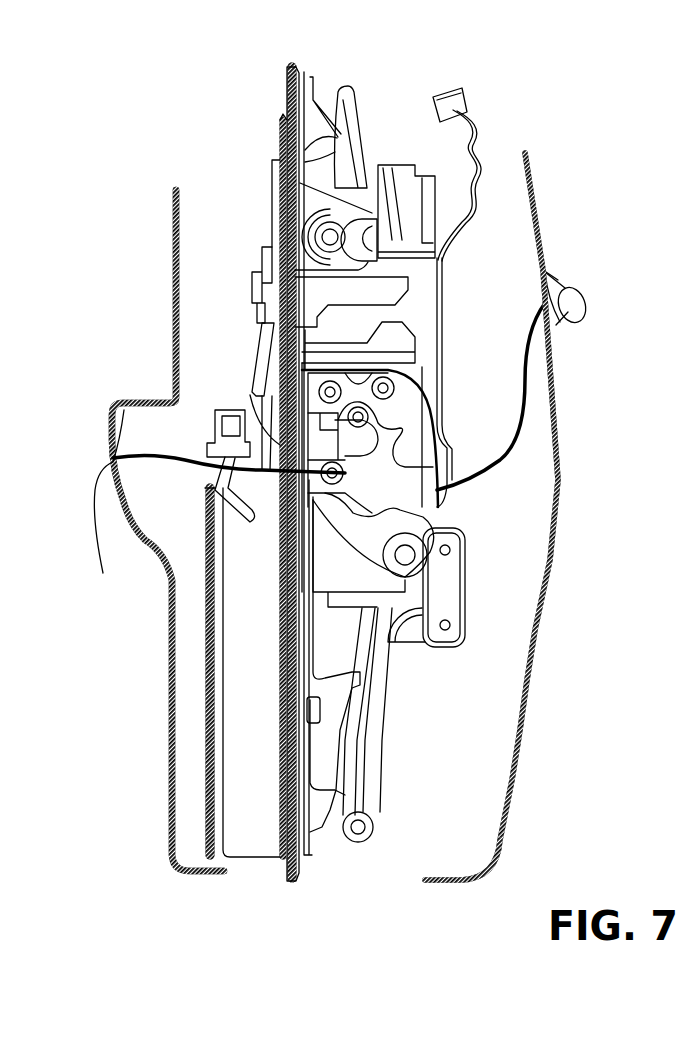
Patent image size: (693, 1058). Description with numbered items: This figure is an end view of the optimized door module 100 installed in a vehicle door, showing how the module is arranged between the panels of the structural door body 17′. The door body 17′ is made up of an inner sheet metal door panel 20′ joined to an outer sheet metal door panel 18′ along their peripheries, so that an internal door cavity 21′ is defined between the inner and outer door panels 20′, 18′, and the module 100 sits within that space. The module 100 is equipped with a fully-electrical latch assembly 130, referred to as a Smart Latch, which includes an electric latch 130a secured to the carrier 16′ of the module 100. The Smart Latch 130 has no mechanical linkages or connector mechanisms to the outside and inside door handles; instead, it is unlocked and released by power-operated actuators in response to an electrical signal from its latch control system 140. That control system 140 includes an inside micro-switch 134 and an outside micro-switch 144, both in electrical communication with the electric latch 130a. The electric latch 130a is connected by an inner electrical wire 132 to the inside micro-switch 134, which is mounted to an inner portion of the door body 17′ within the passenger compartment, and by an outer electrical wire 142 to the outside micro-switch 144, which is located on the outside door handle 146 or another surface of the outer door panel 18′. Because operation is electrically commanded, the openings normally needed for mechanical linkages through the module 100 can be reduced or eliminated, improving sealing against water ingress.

The door module 100 is at (230, 355).
The latch assembly 130 is at (447, 342).
The electric latch 130a is at (400, 412).
The inner electrical wire 132 is at (153, 452).
The inside micro-switch 134 is at (105, 506).
The latch control system 140 is at (498, 187).
The outer electrical wire 142 is at (503, 458).
The outside micro-switch 144 is at (560, 327).
The outside door handle 146 is at (580, 298).
The carrier 16′ is at (310, 852).
The structural door body 17′ is at (535, 769).
The outer sheet metal door panel 18′ is at (528, 683).
The inner sheet metal door panel 20′ is at (168, 703).
The internal door cavity 21′ is at (413, 746).